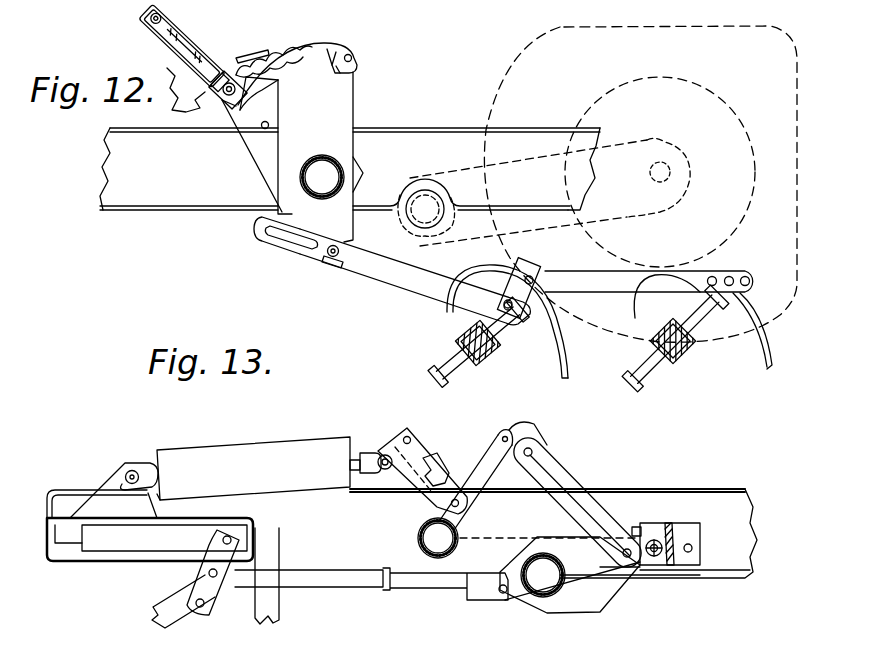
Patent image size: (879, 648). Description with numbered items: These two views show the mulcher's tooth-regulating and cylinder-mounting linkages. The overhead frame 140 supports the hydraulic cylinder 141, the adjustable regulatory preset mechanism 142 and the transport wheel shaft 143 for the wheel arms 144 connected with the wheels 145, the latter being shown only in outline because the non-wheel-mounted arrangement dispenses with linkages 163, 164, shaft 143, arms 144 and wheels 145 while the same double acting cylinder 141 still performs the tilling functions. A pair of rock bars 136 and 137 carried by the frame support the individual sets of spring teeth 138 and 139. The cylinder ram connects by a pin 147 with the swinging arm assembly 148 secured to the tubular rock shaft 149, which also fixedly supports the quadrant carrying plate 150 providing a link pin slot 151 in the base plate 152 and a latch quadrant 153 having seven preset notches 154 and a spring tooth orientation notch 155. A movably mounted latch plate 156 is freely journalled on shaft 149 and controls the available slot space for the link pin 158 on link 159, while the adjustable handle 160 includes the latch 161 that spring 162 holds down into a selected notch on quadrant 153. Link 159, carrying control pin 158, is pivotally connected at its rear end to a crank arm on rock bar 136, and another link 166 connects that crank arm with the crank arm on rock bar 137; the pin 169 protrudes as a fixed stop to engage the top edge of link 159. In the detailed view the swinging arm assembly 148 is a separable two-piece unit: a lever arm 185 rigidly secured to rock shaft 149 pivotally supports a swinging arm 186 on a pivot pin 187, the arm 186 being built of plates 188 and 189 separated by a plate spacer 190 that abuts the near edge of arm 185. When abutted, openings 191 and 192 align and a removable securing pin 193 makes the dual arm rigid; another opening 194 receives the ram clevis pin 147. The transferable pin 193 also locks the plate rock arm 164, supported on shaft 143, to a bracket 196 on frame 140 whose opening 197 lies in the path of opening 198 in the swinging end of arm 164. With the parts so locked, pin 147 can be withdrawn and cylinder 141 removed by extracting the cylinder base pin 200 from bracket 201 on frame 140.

In FIG. 12, the rock bar 136 is at (496, 360).
In FIG. 12, the rock bar 137 is at (657, 378).
In FIG. 12, the spring teeth 138 is at (567, 358).
In FIG. 12, the spring teeth 139 is at (760, 364).
In FIG. 12, the overhead frame 140 is at (118, 160).
In FIG. 13, the overhead frame 140 is at (48, 517).
In FIG. 12, the hydraulic cylinder 141 is at (187, 97).
In FIG. 13, the hydraulic cylinder 141 is at (234, 457).
In FIG. 12, the adjustable regulatory preset mechanism 142 is at (365, 147).
In FIG. 12, the transport wheel shaft 143 is at (447, 192).
In FIG. 13, the transport wheel shaft 143 is at (537, 594).
In FIG. 12, the wheel arms 144 is at (640, 226).
In FIG. 12, the wheels 145 is at (550, 56).
In FIG. 13, the pin 147 is at (385, 458).
In FIG. 12, the swinging arm assembly 148 is at (314, 40).
In FIG. 13, the swinging arm assembly 148 is at (405, 502).
In FIG. 12, the tubular rock shaft 149 is at (300, 178).
In FIG. 13, the tubular rock shaft 149 is at (461, 538).
In FIG. 12, the quadrant carrying plate 150 is at (351, 103).
In FIG. 12, the link pin slot 151 is at (256, 243).
In FIG. 12, the base plate 152 is at (287, 251).
In FIG. 12, the latch quadrant 153 is at (330, 63).
In FIG. 12, the preset notches 154 is at (270, 53).
In FIG. 12, the spring tooth orientation notch 155 is at (334, 44).
In FIG. 12, the latch plate 156 is at (262, 158).
In FIG. 12, the link pin 158 is at (333, 261).
In FIG. 12, the link 159 is at (407, 281).
In FIG. 12, the adjustable handle 160 is at (148, 26).
In FIG. 12, the latch 161 is at (230, 82).
In FIG. 12, the spring 162 is at (197, 46).
In FIG. 13, the linkage 163 is at (573, 481).
In FIG. 13, the plate rock arm 164 is at (583, 590).
In FIG. 12, the link 166 is at (590, 285).
In FIG. 12, the pin 169 is at (541, 268).
In FIG. 13, the lever arm 185 is at (493, 445).
In FIG. 13, the swinging arm 186 is at (428, 439).
In FIG. 13, the pivot pin 187 is at (480, 509).
In FIG. 13, the plate 188 is at (437, 497).
In FIG. 13, the plate 189 is at (433, 468).
In FIG. 13, the plate spacer 190 is at (384, 437).
In FIG. 13, the opening 191 is at (414, 430).
In FIG. 13, the opening 192 is at (514, 433).
In FIG. 13, the securing pin 193 is at (670, 523).
In FIG. 13, the opening 194 is at (387, 470).
In FIG. 13, the bracket 196 is at (700, 566).
In FIG. 13, the opening 197 is at (657, 566).
In FIG. 13, the opening 198 is at (636, 524).
In FIG. 13, the cylinder base pin 200 is at (133, 470).
In FIG. 13, the bracket 201 is at (110, 483).